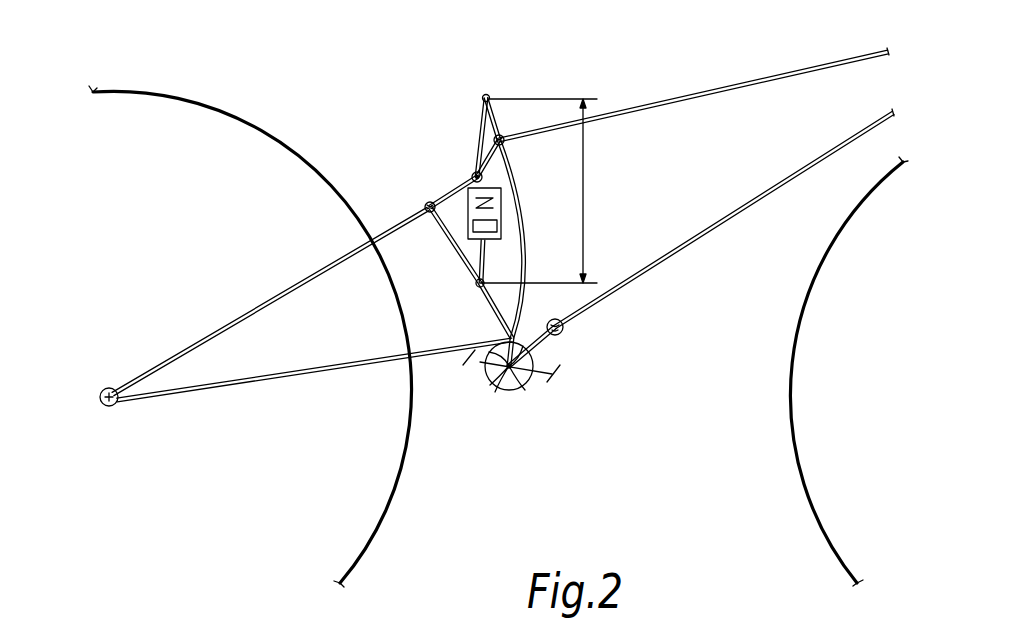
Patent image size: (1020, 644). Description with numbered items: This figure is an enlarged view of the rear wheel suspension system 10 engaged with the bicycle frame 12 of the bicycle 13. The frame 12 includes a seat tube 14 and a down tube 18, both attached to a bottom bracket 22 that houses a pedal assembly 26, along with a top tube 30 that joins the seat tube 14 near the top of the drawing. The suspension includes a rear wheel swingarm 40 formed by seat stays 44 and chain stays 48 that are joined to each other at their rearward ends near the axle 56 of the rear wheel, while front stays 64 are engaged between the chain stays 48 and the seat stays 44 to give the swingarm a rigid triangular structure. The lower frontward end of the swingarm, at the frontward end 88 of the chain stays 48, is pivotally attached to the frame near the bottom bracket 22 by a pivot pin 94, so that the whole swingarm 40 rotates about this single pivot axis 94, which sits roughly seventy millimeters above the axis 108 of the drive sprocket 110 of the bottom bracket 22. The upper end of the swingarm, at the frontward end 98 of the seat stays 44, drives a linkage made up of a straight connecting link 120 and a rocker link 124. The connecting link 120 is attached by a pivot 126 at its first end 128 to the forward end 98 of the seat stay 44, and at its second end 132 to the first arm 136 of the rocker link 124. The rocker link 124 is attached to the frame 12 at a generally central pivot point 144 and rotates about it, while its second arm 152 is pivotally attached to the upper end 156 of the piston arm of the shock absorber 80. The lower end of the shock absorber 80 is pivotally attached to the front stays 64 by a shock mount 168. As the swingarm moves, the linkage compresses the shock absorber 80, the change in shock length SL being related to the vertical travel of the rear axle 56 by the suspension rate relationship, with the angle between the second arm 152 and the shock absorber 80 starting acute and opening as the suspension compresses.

The rear wheel suspension system 10 is at (254, 121).
The bicycle frame 12 is at (755, 70).
The bicycle 13 is at (357, 155).
The seat tube 14 is at (525, 248).
The down tube 18 is at (718, 223).
The bottom bracket 22 is at (509, 389).
The pedal assembly 26 is at (527, 387).
The top tube 30 is at (680, 95).
The rear wheel swingarm 40 is at (188, 323).
The seat stays 44 is at (255, 308).
The chain stays 48 is at (297, 373).
The axle 56 is at (112, 407).
The front stays 64 is at (447, 237).
The shock absorber 80 is at (501, 222).
The frontward end of the chain stays 88 is at (528, 330).
The pivot pin 94 is at (563, 330).
The frontward end of the seat stays 98 is at (431, 212).
The axis of the drive sprocket 108 is at (483, 373).
The drive sprocket 110 is at (495, 383).
The straight connecting link 120 is at (457, 185).
The rocker link 124 is at (502, 135).
The pivot 126 is at (423, 207).
The first end of the connecting link 128 is at (448, 195).
The second end of the connecting link 132 is at (469, 170).
The first arm of the rocker link 136 is at (493, 157).
The pivot point 144 is at (508, 145).
The second arm of the rocker link 152 is at (500, 105).
The upper end of the piston arm 156 is at (483, 113).
The shock mount 168 is at (478, 287).
The shock length SL is at (538, 191).